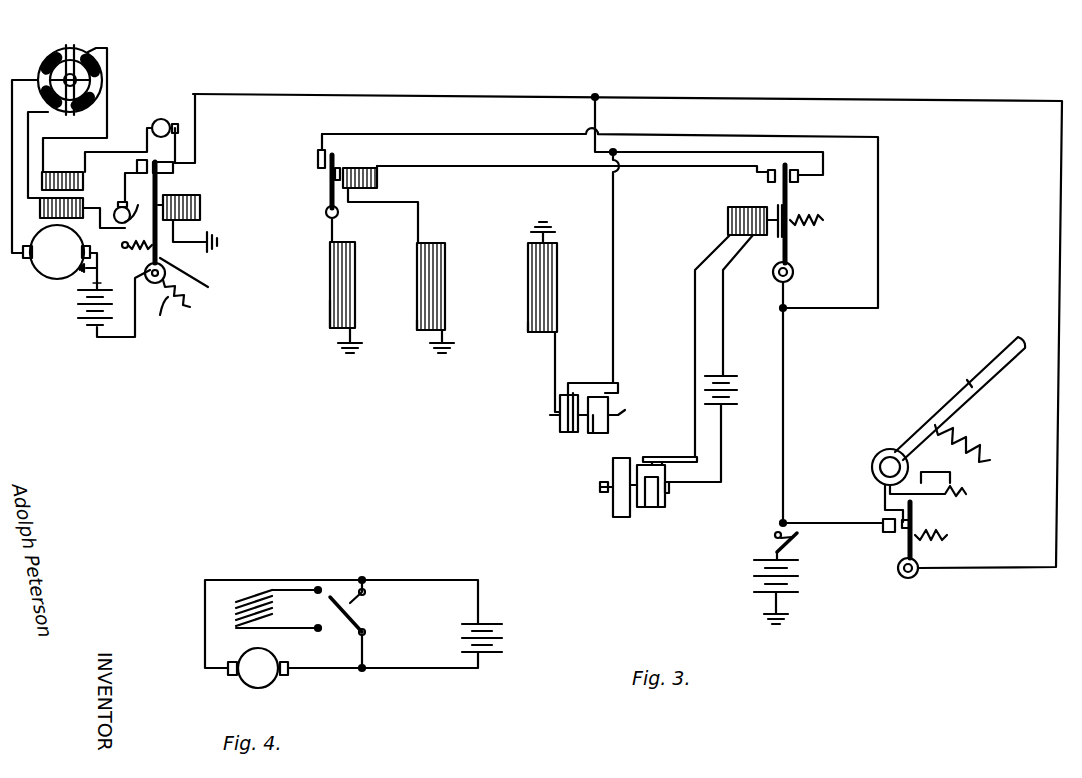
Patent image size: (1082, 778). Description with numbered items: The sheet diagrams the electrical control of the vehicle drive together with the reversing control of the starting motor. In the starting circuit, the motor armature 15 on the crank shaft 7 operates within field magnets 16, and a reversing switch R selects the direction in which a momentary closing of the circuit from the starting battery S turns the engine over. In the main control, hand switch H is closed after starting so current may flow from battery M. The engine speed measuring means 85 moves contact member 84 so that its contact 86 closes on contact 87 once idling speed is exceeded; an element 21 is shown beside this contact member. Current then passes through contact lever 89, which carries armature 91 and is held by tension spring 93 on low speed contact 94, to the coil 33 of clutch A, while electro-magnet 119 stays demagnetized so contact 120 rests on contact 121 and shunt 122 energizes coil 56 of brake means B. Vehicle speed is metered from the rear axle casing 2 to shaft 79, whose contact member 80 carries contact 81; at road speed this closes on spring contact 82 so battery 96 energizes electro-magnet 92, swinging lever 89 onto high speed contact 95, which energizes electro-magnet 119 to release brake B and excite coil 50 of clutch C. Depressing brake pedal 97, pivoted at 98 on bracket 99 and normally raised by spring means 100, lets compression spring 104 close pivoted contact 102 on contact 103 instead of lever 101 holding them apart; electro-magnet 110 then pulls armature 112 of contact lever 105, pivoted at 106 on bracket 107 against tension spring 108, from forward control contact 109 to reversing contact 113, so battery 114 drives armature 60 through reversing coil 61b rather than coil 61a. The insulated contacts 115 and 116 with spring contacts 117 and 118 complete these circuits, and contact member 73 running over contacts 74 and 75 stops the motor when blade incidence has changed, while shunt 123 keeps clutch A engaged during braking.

In FIG. 3, the contact member 73 is at (70, 46).
In FIG. 3, the contact 74 is at (78, 110).
In FIG. 3, the contact 75 is at (47, 50).
In FIG. 3, the armature 60 is at (37, 273).
In FIG. 3, the field coil 61a is at (39, 206).
In FIG. 3, the reversing field coil 61b is at (48, 172).
In FIG. 3, the contact lever 105 is at (203, 277).
In FIG. 3, the pivot 106 is at (195, 298).
In FIG. 3, the bracket 107 is at (175, 319).
In FIG. 3, the tension spring 108 is at (145, 270).
In FIG. 3, the forward control contact 109 is at (137, 165).
In FIG. 3, the electro-magnet 110 is at (200, 205).
In FIG. 3, the armature 112 is at (197, 258).
In FIG. 3, the reversing contact 113 is at (158, 165).
In FIG. 3, the battery 114 is at (78, 315).
In FIG. 3, the insulated contact 115 is at (160, 119).
In FIG. 3, the insulated contact 116 is at (118, 206).
In FIG. 3, the spring contact 117 is at (178, 110).
In FIG. 3, the spring contact 118 is at (122, 240).
In FIG. 3, the electro-magnet 119 is at (377, 183).
In FIG. 3, the contact 120 is at (335, 155).
In FIG. 3, the contact 121 is at (318, 165).
In FIG. 3, the shunt 122 is at (433, 122).
In FIG. 3, the shunt 123 is at (598, 113).
In FIG. 3, the brake means B is at (355, 290).
In FIG. 3, the clutch C is at (445, 277).
In FIG. 3, the clutch A is at (557, 275).
In FIG. 3, the coil 56 is at (330, 300).
In FIG. 3, the coil 50 is at (417, 330).
In FIG. 3, the electro-magnetic coil 33 is at (532, 330).
In FIG. 3, the contact 87 is at (618, 383).
In FIG. 3, the contact 86 is at (572, 433).
In FIG. 3, the contact member 84 is at (560, 430).
In FIG. 3, the electro-magnetic speed measuring means 85 is at (607, 433).
In FIG. 3, the crank shaft 7 is at (625, 416).
In FIG. 3, the contact 21 is at (595, 433).
In FIG. 3, the spring contact 82 is at (647, 458).
In FIG. 3, the contact 81 is at (655, 507).
In FIG. 3, the contact member 80 is at (660, 507).
In FIG. 3, the shaft 79 is at (669, 492).
In FIG. 3, the rear axle casing 2 is at (612, 507).
In FIG. 3, the battery 96 is at (737, 405).
In FIG. 3, the hand switch H is at (770, 543).
In FIG. 3, the battery M is at (747, 582).
In FIG. 3, the electro-magnet 92 is at (728, 220).
In FIG. 3, the armature 91 is at (780, 235).
In FIG. 3, the contact 95 is at (768, 177).
In FIG. 3, the contact 94 is at (800, 187).
In FIG. 3, the tension spring 93 is at (823, 226).
In FIG. 3, the contact lever 89 is at (793, 257).
In FIG. 3, the pivot 98 is at (888, 455).
In FIG. 3, the brake pedal 97 is at (985, 388).
In FIG. 3, the spring means 100 is at (960, 438).
In FIG. 3, the bracket 99 is at (967, 494).
In FIG. 3, the lever 101 is at (885, 498).
In FIG. 3, the pivoted contact 102 is at (913, 508).
In FIG. 3, the contact 103 is at (895, 532).
In FIG. 3, the compression spring 104 is at (923, 550).
In FIG. 4, the motor armature 15 is at (278, 687).
In FIG. 4, the field magnets 16 is at (236, 613).
In FIG. 4, the reversing switch R is at (357, 612).
In FIG. 4, the starting battery S is at (462, 640).